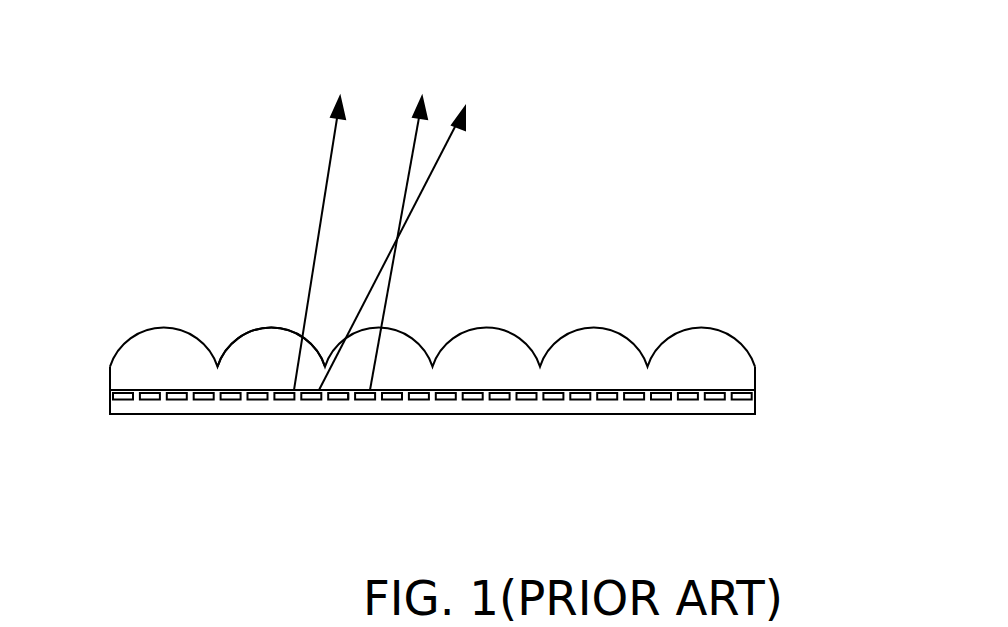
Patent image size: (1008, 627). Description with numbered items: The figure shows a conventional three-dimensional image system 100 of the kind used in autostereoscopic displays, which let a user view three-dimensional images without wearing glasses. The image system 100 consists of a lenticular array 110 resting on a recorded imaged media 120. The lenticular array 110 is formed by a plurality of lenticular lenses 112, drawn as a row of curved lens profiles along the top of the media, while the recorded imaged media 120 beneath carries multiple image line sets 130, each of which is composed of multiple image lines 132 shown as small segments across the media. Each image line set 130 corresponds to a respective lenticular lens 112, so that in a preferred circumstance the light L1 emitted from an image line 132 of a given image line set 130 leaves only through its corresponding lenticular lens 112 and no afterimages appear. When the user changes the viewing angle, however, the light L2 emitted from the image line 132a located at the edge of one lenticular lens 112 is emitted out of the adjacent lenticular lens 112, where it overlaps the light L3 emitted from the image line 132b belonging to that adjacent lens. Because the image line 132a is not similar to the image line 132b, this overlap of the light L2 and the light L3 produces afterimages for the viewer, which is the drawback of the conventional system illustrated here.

The 3D image system 100 is at (454, 367).
The lenticular array 110 is at (109, 367).
The lenticular lens 112 is at (270, 328).
The recorded imaged media 120 is at (755, 402).
The image line set 130 is at (322, 394).
The image line 132 is at (304, 358).
The image line located at the edge of the lenticular lens 132a is at (320, 392).
The image line of the adjacent lenticular lens 132b is at (348, 399).
The light L1 is at (319, 232).
The light L2 is at (403, 233).
The light L3 is at (398, 228).